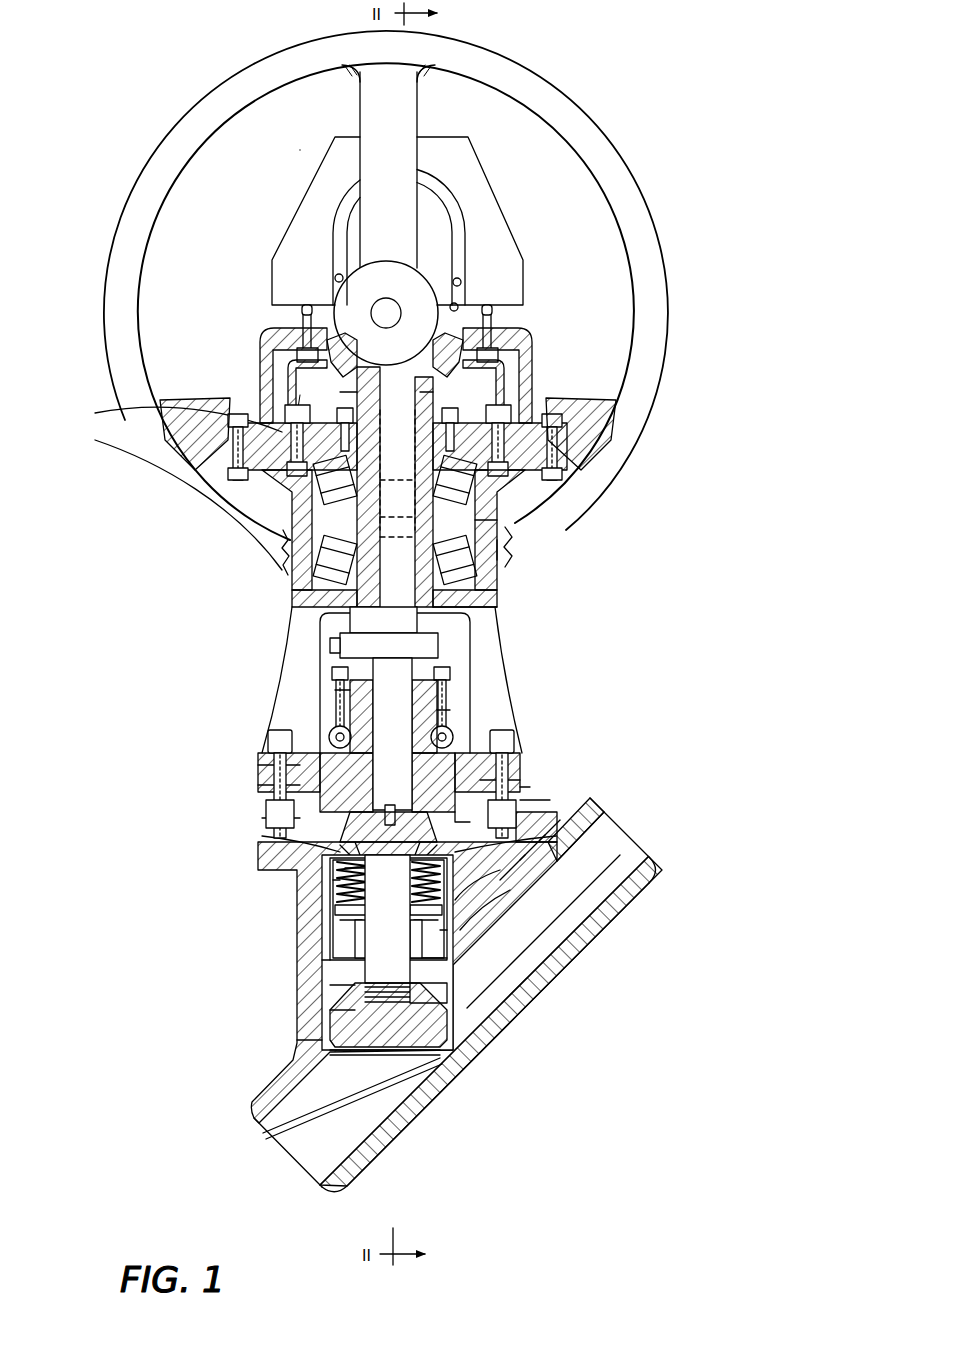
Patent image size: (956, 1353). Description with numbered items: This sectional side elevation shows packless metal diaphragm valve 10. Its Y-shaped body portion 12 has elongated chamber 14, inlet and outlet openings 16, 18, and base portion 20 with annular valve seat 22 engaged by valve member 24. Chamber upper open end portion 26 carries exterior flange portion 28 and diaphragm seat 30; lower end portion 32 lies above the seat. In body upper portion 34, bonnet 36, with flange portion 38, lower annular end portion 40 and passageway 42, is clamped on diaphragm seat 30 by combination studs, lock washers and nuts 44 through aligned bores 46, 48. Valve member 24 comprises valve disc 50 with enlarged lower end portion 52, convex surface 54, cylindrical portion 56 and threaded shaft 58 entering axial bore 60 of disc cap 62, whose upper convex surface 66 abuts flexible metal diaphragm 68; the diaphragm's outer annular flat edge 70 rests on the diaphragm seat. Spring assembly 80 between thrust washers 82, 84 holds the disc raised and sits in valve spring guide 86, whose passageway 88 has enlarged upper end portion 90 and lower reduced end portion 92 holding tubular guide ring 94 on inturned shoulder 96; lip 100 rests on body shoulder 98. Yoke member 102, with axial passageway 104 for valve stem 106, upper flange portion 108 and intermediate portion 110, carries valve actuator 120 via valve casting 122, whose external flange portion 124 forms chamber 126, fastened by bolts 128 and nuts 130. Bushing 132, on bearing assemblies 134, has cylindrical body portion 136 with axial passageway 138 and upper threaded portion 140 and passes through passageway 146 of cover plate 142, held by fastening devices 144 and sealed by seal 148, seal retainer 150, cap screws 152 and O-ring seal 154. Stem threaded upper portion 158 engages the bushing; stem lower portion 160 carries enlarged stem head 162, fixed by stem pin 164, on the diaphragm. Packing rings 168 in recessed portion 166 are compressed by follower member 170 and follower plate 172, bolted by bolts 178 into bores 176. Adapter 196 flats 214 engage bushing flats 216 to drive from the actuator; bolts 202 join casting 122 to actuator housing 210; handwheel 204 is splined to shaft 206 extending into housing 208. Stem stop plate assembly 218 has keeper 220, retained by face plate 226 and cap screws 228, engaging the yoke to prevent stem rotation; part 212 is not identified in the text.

The packless metal diaphragm valve 10 is at (135, 162).
The Y-shaped body portion 12 is at (300, 1040).
The elongated chamber 14 is at (310, 940).
The inlet opening 16 is at (290, 1165).
The outlet opening 18 is at (633, 863).
The base portion 20 is at (425, 1125).
The annular valve seat 22 is at (400, 1058).
The valve member 24 is at (440, 1005).
The upper open end portion 26 is at (300, 808).
The exterior flange portion 28 is at (300, 818).
The diaphragm seat 30 is at (345, 850).
The lower end portion 32 is at (440, 990).
The upper portion 34 is at (535, 818).
The bonnet 36 is at (520, 760).
The radially extending flange portion 38 is at (530, 787).
The lower annular end portion 40 is at (447, 818).
The passageway 42 is at (505, 780).
The combination studs, lock washers and nuts 44 is at (516, 735).
The aligned bores 46 is at (550, 800).
The aligned bores 48 is at (560, 830).
The valve disc 50 is at (322, 1025).
The enlarged lower end portion 52 is at (455, 1045).
The convex surface 54 is at (345, 1052).
The cylindrical portion 56 is at (345, 1010).
The threaded shaft 58 is at (387, 928).
The axial bore 60 is at (365, 858).
The disc cap 62 is at (340, 842).
The upper convex surface 66 is at (350, 866).
The flexible metal diaphragm 68 is at (520, 850).
The outer annular flat edge 70 is at (505, 870).
The spring assembly 80 is at (365, 900).
The thrust washer 82 is at (480, 880).
The thrust washer 84 is at (335, 925).
The valve spring guide 86 is at (430, 950).
The passageway 88 is at (366, 916).
The enlarged upper end portion 90 is at (442, 930).
The lower reduced end portion 92 is at (425, 965).
The tubular guide ring 94 is at (330, 965).
The inturned shoulder 96 is at (350, 985).
The inwardly extending shoulder 98 is at (340, 882).
The lip 100 is at (465, 905).
The yoke member 102 is at (262, 648).
The axial passageway 104 is at (383, 621).
The valve stem 106 is at (393, 538).
The upper flange portion 108 is at (262, 470).
The intermediate portion 110 is at (290, 620).
The valve actuator 120 is at (399, 224).
The valve casting 122 is at (357, 370).
The external flange portion 124 is at (225, 440).
The chamber 126 is at (283, 375).
The bolts 128 is at (230, 480).
The nuts 130 is at (235, 430).
The bushing 132 is at (310, 528).
The bearing assemblies 134 is at (455, 500).
The elongated cylindrical body portion 136 is at (490, 540).
The axial passageway 138 is at (384, 536).
The upper threaded portion 140 is at (395, 470).
The cover plate 142 is at (297, 408).
The fastening devices 144 is at (498, 410).
The axial passageway 146 is at (386, 452).
The seal 148 is at (450, 416).
The seal retainer 150 is at (500, 400).
The cap screws 152 is at (345, 415).
The O-ring seal 154 is at (490, 480).
The threaded upper portion 158 is at (396, 467).
The lower portion 160 is at (392, 734).
The enlarged stem head 162 is at (330, 828).
The stem pin 164 is at (390, 803).
The annular recessed portion 166 is at (262, 785).
The packing rings 168 is at (262, 765).
The follower member 170 is at (442, 710).
The follower plate 172 is at (445, 690).
The bores 176 is at (333, 735).
The bolts 178 is at (440, 672).
The adapter 196 is at (440, 372).
The threaded bolts 202 is at (300, 312).
The handwheel 204 is at (110, 268).
The shaft 206 is at (388, 300).
The housing 208 is at (443, 258).
The housing 210 is at (318, 190).
The hub serration 212 is at (357, 372).
The flats 214 is at (357, 392).
The flats 216 is at (420, 392).
The stem stop plate assembly 218 is at (483, 612).
The keeper 220 is at (430, 651).
The face plate 226 is at (343, 690).
The cap screws 228 is at (335, 647).